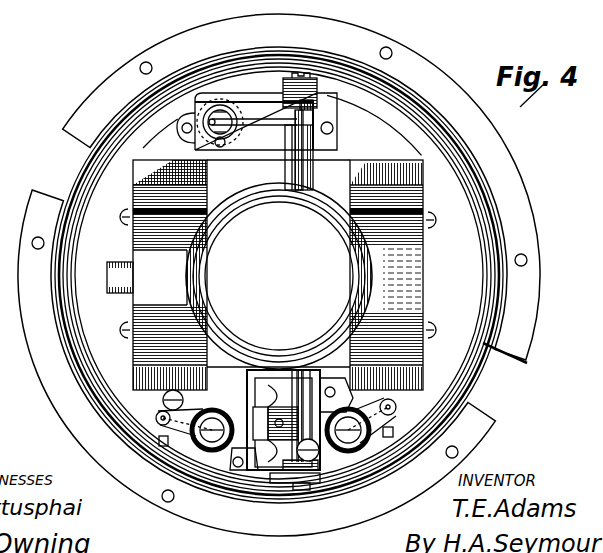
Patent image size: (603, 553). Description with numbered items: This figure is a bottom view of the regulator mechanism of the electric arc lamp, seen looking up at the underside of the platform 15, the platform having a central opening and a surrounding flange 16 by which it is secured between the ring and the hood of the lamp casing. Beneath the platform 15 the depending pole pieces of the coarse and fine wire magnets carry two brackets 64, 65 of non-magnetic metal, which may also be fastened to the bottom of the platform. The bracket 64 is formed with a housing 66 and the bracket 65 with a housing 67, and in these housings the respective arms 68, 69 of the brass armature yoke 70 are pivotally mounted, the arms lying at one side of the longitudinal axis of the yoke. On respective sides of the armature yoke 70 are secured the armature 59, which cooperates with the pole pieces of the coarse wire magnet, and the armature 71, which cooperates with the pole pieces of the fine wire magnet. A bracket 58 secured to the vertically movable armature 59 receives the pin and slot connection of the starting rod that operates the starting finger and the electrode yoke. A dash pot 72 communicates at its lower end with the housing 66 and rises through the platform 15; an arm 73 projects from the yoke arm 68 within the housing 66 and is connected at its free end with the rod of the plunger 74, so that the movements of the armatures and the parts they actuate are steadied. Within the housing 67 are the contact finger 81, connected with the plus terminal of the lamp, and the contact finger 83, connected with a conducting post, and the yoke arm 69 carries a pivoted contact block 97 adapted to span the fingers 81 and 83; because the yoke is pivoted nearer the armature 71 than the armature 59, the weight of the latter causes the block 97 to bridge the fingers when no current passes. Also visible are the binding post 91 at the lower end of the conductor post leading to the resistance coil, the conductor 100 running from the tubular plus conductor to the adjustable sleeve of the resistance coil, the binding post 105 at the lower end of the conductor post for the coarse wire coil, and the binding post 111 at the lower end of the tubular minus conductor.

The platform 15 is at (279, 275).
The flange 16 is at (536, 331).
The bracket 58 is at (120, 262).
The armature 59 is at (163, 275).
The bracket 64 is at (376, 116).
The bracket 65 is at (400, 405).
The housing 66 is at (318, 97).
The housing 67 is at (290, 470).
The arm 68 is at (286, 140).
The arm 69 is at (283, 430).
The armature yoke 70 is at (292, 206).
The armature 71 is at (421, 271).
The dash pot 72 is at (231, 108).
The arm 73 is at (254, 115).
The plunger 74 is at (190, 113).
The contact finger 81 is at (248, 392).
The contact finger 83 is at (250, 457).
The binding post 91 is at (157, 417).
The contact block 97 is at (282, 372).
The conductor 100 is at (418, 390).
The binding post 105 is at (332, 452).
The binding post 111 is at (184, 403).